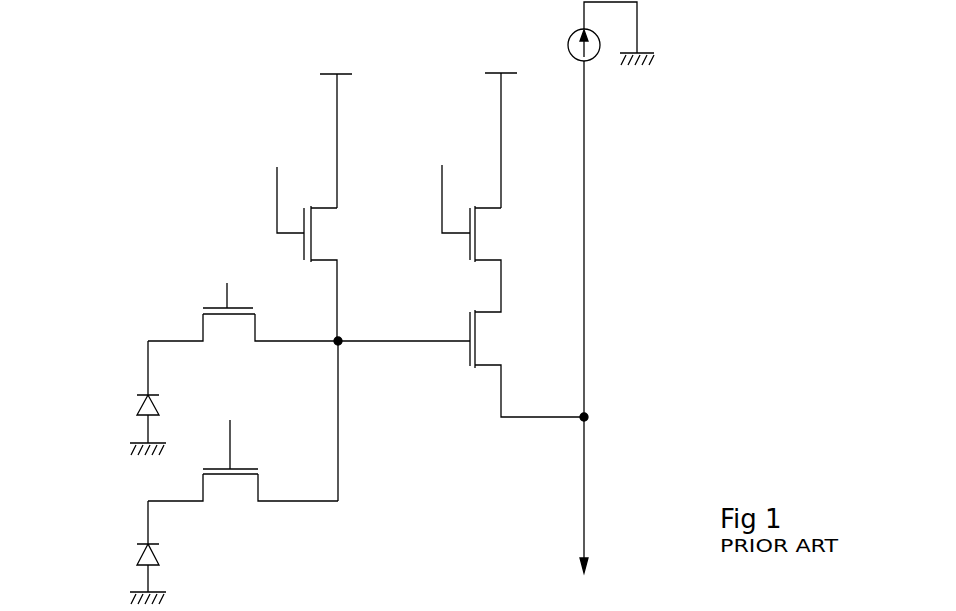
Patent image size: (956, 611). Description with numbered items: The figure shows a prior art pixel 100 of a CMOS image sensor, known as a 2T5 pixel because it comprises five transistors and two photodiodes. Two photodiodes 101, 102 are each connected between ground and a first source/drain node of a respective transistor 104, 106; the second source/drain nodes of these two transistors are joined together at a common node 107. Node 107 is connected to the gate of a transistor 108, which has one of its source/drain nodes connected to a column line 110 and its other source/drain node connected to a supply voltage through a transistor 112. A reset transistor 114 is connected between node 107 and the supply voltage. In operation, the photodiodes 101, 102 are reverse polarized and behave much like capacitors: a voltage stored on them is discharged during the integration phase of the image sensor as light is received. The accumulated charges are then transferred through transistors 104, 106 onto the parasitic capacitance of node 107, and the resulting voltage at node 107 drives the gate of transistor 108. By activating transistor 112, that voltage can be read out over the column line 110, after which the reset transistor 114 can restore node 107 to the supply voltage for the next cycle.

The pixel 100 is at (179, 109).
The photodiode 101 is at (135, 406).
The photodiode 102 is at (137, 555).
The transistor 104 is at (227, 325).
The transistor 106 is at (230, 490).
The node 107 is at (340, 343).
The transistor 108 is at (492, 337).
The column line 110 is at (584, 263).
The transistor 112 is at (485, 232).
The reset transistor 114 is at (318, 232).